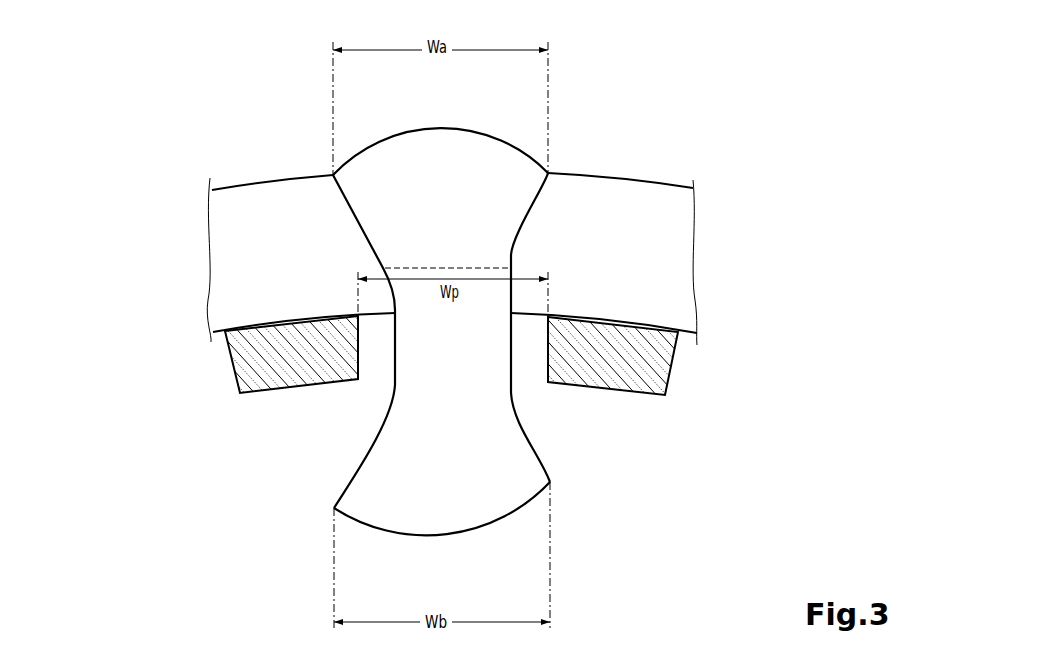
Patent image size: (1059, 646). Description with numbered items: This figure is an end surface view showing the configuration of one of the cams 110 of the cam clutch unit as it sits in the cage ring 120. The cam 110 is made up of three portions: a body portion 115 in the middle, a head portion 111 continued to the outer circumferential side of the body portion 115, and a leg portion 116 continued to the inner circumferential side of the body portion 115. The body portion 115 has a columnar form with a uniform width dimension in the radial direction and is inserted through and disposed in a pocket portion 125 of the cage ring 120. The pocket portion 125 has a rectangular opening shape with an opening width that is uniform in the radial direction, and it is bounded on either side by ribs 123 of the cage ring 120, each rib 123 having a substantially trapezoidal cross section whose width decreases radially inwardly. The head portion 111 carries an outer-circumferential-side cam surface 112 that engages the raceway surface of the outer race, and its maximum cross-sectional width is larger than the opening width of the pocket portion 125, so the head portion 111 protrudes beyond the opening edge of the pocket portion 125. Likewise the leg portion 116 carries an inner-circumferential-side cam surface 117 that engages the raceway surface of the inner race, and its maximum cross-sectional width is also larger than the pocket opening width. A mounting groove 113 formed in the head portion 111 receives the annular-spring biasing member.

The cam 110 is at (440, 335).
The head portion 111 is at (471, 189).
The outer-circumferential-side cam surface 112 is at (467, 128).
The mounting groove 113 is at (473, 263).
The body portion 115 is at (408, 346).
The leg portion 116 is at (442, 493).
The inner-circumferential-side cam surface 117 is at (478, 530).
The cage ring 120 is at (645, 193).
The rib 123 is at (243, 370).
The pocket portion 125 is at (366, 368).